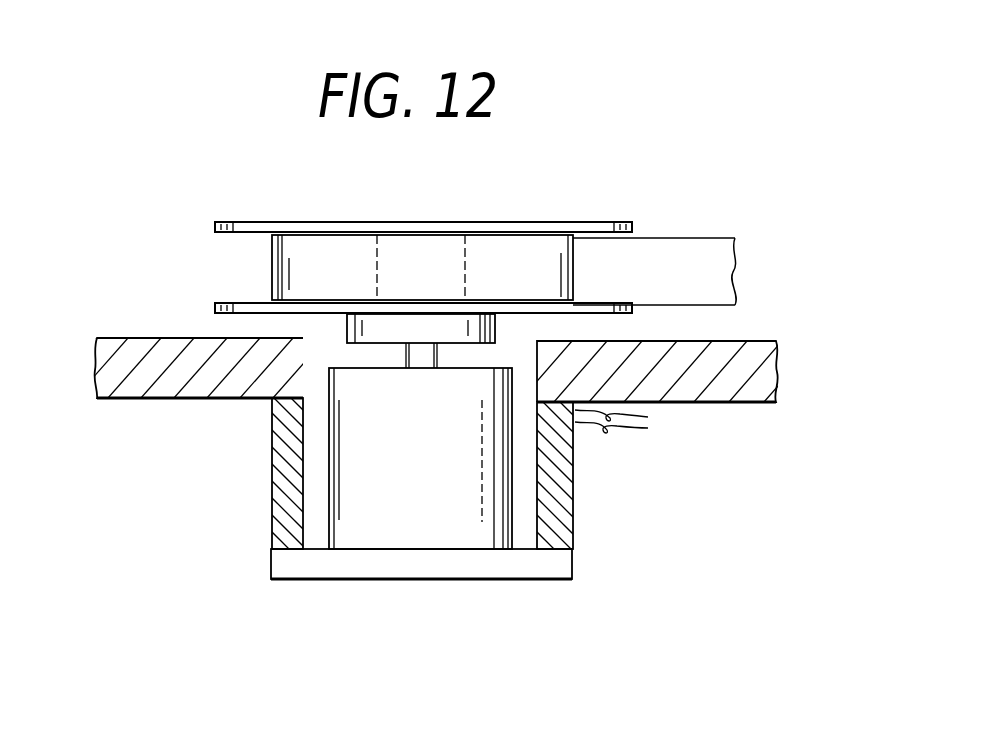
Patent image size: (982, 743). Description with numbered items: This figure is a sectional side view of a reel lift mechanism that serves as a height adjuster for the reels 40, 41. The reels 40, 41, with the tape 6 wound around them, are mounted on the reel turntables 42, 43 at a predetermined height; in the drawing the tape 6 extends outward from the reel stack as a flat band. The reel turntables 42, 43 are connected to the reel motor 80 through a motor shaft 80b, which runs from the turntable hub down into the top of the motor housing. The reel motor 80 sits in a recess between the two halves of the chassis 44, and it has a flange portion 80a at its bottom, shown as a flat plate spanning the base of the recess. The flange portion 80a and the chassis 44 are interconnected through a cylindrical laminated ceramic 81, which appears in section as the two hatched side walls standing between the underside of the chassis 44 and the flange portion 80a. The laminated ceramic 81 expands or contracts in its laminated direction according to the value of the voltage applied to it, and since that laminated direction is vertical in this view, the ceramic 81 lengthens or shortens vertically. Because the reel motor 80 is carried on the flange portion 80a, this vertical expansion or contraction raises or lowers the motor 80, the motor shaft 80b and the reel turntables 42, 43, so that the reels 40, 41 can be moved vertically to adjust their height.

The tape 6 is at (682, 244).
The reel 40 is at (418, 226).
The reel 41 is at (423, 227).
The reel turntable 42 is at (362, 316).
The reel turntable 43 is at (422, 267).
The chassis 44 is at (133, 342).
The reel motor 80 is at (390, 538).
The flange portion 80a is at (533, 569).
The motor shaft 80b is at (422, 366).
The cylindrical laminated ceramic 81 is at (283, 492).